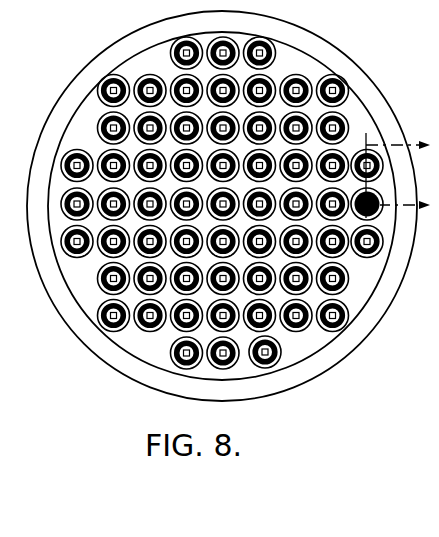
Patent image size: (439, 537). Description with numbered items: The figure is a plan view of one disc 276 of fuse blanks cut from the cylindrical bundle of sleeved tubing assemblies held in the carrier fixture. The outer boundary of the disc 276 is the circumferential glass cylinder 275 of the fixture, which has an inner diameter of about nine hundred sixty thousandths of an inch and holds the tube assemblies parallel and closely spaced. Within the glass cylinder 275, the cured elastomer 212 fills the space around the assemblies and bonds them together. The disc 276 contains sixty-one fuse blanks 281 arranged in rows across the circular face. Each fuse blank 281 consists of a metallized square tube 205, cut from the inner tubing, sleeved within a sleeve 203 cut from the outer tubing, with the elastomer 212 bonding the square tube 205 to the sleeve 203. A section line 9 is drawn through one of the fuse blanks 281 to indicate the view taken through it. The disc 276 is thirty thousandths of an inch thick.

The disc 276 is at (84, 381).
The glass cylinder 275 is at (328, 352).
The elastomer 212 is at (206, 229).
The fuse blank 281 is at (172, 364).
The sleeve 203 is at (274, 381).
The metallized square tube 205 is at (241, 387).
The section line 9- 9 is at (402, 175).